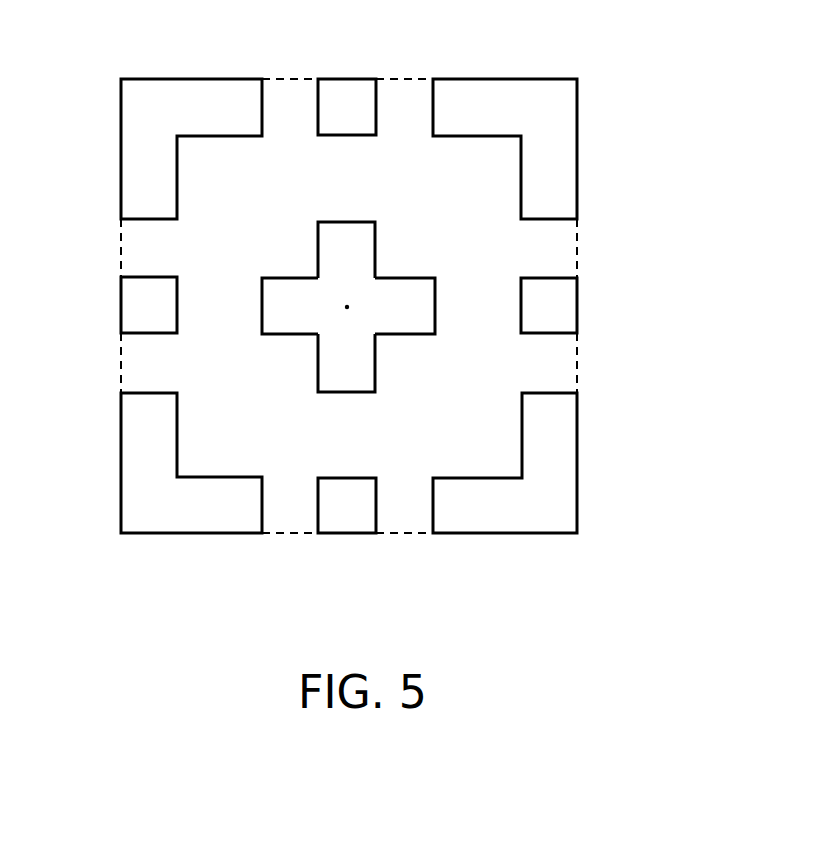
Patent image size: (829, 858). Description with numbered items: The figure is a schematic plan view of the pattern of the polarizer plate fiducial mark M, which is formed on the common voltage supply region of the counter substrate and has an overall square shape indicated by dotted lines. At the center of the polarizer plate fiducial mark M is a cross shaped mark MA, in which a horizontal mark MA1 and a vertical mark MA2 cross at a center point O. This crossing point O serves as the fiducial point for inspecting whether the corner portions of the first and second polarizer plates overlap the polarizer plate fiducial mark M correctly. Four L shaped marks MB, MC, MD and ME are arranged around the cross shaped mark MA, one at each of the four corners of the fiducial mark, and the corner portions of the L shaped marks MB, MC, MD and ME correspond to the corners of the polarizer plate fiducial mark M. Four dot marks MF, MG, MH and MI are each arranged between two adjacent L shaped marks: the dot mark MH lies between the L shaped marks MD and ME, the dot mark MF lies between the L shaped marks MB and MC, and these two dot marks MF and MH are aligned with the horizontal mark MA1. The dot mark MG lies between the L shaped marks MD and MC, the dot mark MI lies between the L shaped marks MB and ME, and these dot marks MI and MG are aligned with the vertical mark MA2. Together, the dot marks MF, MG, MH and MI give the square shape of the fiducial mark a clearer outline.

The polarizer plate fiducial mark M is at (391, 309).
The cross shaped mark MA is at (378, 315).
The horizontal mark MA1 is at (415, 318).
The vertical mark MA2 is at (365, 382).
The L shaped mark MB is at (563, 188).
The L shaped mark MC is at (562, 465).
The L shaped mark MD is at (191, 522).
The L shaped mark ME is at (127, 150).
The dot mark MF is at (563, 304).
The dot mark MG is at (350, 522).
The dot mark MH is at (127, 307).
The dot mark MI is at (347, 90).
The center point O is at (347, 307).